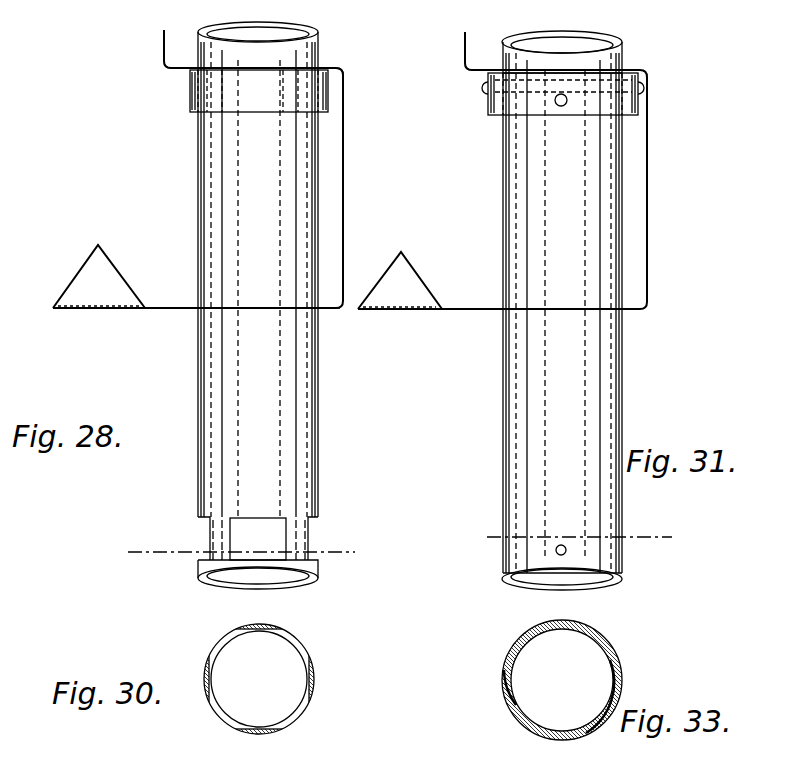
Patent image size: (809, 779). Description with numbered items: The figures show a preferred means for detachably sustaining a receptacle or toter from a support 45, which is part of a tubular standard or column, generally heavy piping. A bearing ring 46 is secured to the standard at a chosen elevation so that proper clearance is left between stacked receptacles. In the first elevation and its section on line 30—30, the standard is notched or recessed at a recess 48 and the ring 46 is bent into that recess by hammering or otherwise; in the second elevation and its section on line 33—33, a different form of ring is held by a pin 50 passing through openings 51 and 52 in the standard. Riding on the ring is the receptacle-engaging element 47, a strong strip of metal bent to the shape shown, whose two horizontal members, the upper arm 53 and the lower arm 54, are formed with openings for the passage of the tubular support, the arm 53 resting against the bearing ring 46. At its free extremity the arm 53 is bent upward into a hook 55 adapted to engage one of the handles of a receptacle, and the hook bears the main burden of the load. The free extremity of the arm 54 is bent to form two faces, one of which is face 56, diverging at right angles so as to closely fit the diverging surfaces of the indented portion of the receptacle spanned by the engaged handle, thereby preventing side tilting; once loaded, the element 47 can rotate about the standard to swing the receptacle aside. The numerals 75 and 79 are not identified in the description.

In FIG. 28, the section line 30— 30 is at (239, 556).
In FIG. 31, the section line 33— 33 is at (574, 539).
In FIG. 28, the support 45 is at (306, 430).
In FIG. 28, the bearing ring 46 is at (258, 108).
In FIG. 31, the bearing ring 46 is at (496, 112).
In FIG. 28, the receptacle-engaging element 47 is at (345, 131).
In FIG. 31, the receptacle-engaging element 47 is at (649, 186).
In FIG. 28, the notch or recess 48 is at (252, 526).
In FIG. 30, the notch or recess 48 is at (312, 676).
In FIG. 31, the pin 50 is at (603, 90).
In FIG. 33, the opening 51 is at (566, 624).
In FIG. 33, the opening 52 is at (622, 680).
In FIG. 28, the arm 53 is at (326, 70).
In FIG. 28, the arm 54 is at (152, 306).
In FIG. 28, the hook 55 is at (162, 48).
In FIG. 31, the hook 55 is at (464, 48).
In FIG. 28, the face 56 is at (72, 283).
In FIG. 31, the face 56 is at (414, 278).
In FIG. 31, the tubular member 75 is at (562, 310).
In FIG. 31, the hole 79 is at (561, 108).